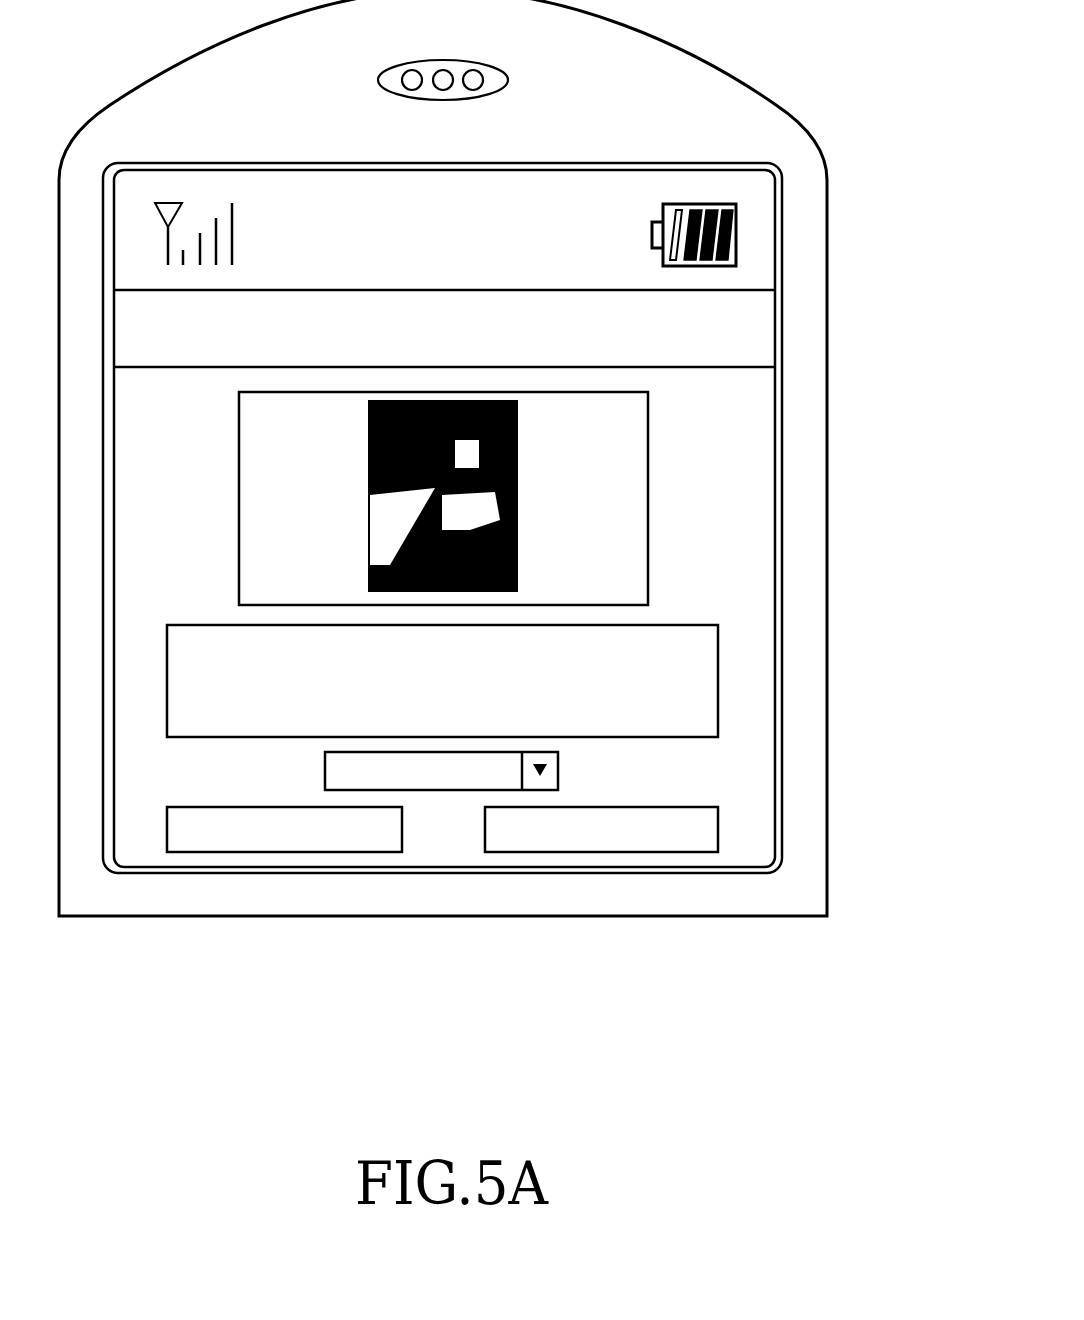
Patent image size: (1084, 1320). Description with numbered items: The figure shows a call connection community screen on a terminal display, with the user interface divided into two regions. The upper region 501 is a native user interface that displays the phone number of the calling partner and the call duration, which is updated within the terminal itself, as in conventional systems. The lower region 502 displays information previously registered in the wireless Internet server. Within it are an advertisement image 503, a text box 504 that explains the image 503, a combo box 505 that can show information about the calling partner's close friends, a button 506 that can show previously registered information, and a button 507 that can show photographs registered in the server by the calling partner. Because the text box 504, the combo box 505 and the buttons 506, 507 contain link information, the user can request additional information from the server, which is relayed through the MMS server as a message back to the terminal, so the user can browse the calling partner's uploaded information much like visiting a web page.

The upper region 501 is at (775, 326).
The lower region 502 is at (775, 582).
The advertisement image 503 is at (648, 498).
The text box 504 is at (718, 680).
The combo box 505 is at (438, 790).
The button 506 is at (283, 852).
The button 507 is at (602, 853).